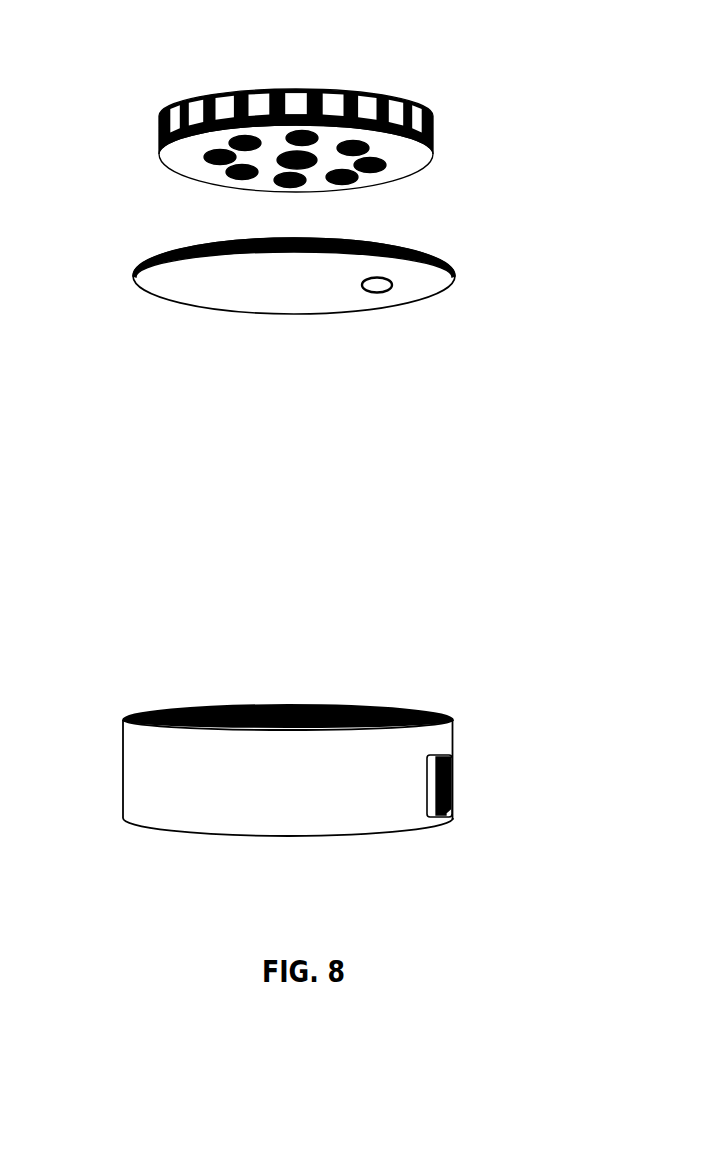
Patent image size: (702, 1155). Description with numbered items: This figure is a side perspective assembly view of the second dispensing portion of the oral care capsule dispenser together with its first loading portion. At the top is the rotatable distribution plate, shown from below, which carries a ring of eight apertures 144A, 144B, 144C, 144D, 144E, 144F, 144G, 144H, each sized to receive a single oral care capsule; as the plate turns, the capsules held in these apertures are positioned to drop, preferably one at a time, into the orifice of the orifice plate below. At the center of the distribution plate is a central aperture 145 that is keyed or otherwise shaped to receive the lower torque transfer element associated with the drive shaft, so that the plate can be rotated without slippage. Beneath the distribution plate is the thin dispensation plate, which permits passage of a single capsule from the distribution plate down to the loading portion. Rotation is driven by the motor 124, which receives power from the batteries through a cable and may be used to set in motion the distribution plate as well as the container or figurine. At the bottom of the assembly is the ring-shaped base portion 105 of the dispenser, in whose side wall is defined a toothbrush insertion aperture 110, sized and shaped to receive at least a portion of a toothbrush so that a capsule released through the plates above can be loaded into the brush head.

The base portion 105 is at (122, 765).
The toothbrush insertion aperture 110 is at (433, 780).
The motor 124 is at (440, 265).
The central aperture 145 is at (281, 152).
The aperture 144A is at (430, 159).
The aperture 144B is at (356, 179).
The aperture 144C is at (286, 185).
The aperture 144D is at (228, 172).
The aperture 144E is at (210, 155).
The aperture 144F is at (237, 138).
The aperture 144G is at (302, 133).
The aperture 144H is at (359, 141).